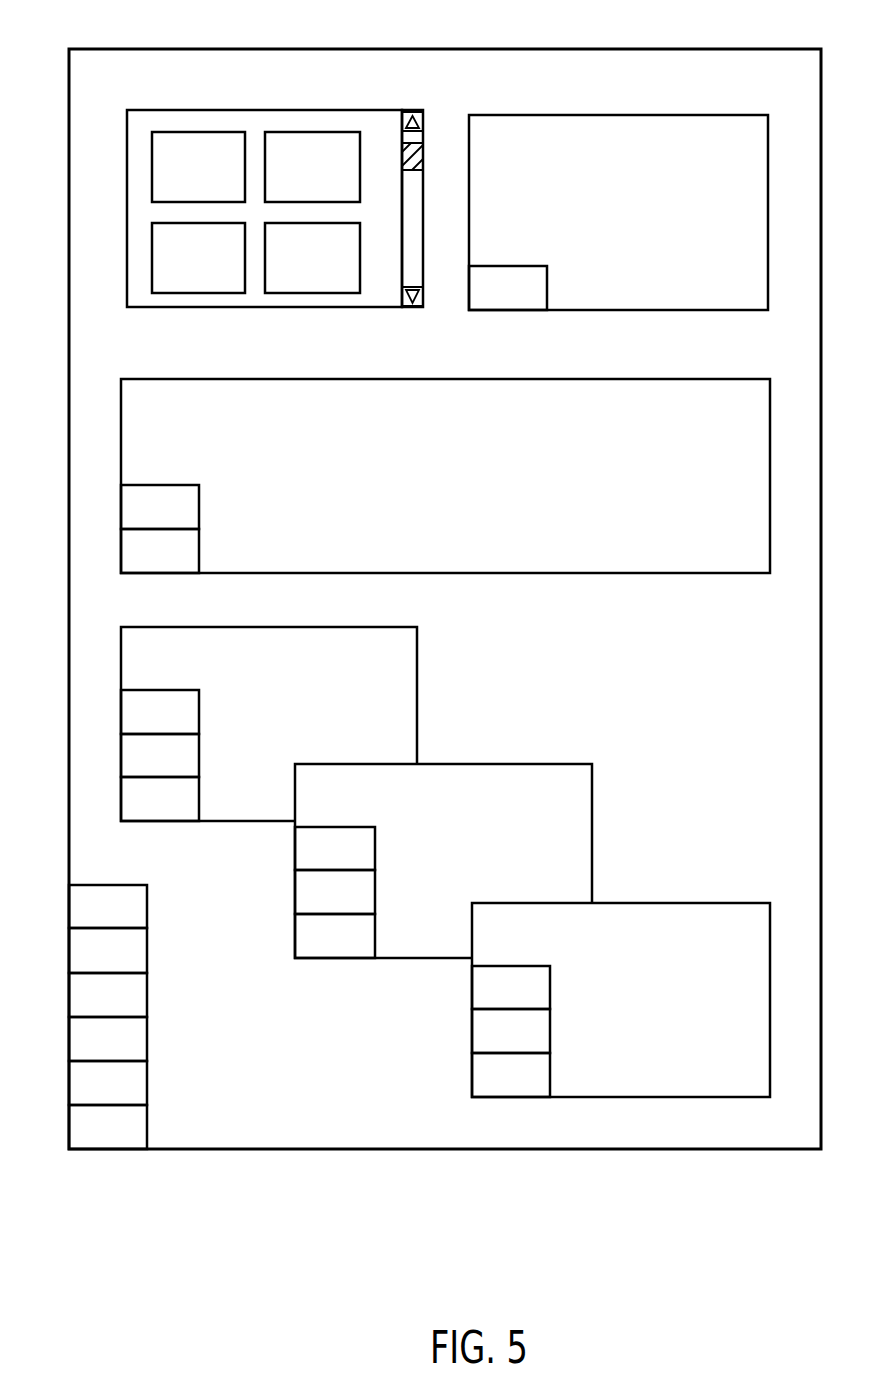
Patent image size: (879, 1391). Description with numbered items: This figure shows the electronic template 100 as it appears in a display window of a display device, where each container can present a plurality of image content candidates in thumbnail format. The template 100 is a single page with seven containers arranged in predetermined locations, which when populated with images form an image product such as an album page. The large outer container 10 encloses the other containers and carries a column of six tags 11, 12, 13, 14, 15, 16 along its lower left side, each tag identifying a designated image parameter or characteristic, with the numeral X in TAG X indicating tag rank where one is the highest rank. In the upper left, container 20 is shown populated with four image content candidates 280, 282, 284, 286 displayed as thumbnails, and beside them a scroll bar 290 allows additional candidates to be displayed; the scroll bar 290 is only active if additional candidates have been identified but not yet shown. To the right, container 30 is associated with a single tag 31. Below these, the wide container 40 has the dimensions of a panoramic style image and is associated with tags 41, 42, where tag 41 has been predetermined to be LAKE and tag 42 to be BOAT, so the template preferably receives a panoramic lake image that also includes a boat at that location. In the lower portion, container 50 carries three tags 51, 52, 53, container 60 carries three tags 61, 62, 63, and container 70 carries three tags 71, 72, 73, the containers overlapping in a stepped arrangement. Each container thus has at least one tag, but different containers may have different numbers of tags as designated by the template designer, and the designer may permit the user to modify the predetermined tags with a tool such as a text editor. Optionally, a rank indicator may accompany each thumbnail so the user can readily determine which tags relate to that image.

The electronic template 100 is at (702, 31).
The container 10 is at (435, 52).
The container 20 is at (338, 116).
The image content candidate 280 is at (165, 161).
The image content candidate 282 is at (287, 148).
The image content candidate 284 is at (165, 273).
The image content candidate 286 is at (302, 284).
The scroll bar 290 is at (426, 116).
The container 30 is at (681, 120).
The tag 31 is at (479, 283).
The container 40 is at (587, 380).
The tag 41 is at (127, 548).
The tag 42 is at (127, 505).
The container 50 is at (403, 642).
The tag 51 is at (124, 790).
The tag 52 is at (124, 745).
The tag 53 is at (124, 701).
The container 60 is at (580, 782).
The tag 61 is at (303, 928).
The tag 62 is at (303, 883).
The tag 63 is at (303, 840).
The container 70 is at (679, 905).
The tag 71 is at (481, 1065).
The tag 72 is at (481, 1021).
The tag 73 is at (481, 978).
The tag 11 is at (73, 1121).
The tag 12 is at (73, 1076).
The tag 13 is at (73, 1033).
The tag 14 is at (73, 988).
The tag 15 is at (73, 945).
The tag 16 is at (73, 900).